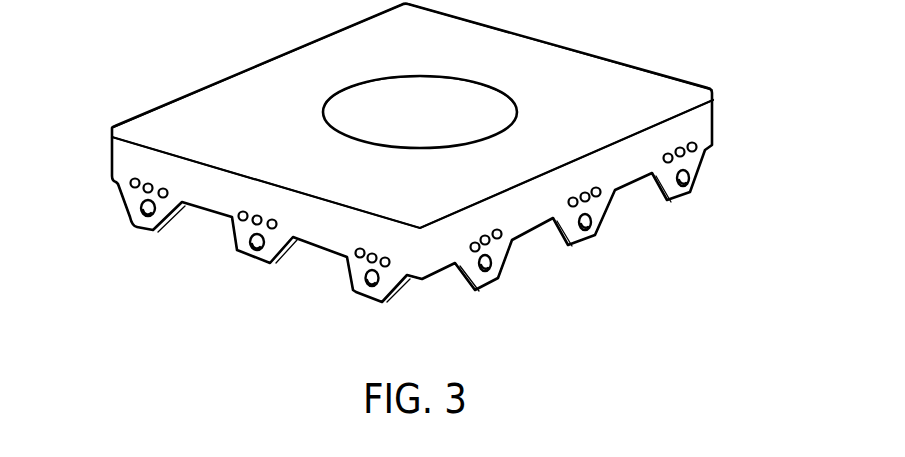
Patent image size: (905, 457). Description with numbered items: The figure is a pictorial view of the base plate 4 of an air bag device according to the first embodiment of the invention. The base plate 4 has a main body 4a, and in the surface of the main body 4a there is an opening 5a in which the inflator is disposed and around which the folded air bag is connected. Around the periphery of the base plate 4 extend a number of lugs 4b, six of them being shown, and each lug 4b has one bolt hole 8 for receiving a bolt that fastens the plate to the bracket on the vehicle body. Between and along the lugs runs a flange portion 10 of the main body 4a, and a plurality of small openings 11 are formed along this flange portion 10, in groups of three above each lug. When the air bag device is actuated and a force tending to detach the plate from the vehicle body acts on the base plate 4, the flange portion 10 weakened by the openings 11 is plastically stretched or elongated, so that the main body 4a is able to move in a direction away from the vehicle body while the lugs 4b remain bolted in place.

The base plate 4 is at (685, 63).
The main body 4a is at (608, 78).
The lugs 4b is at (125, 208).
The opening 5a is at (375, 90).
The bolt hole 8 is at (153, 214).
The flange portion 10 is at (118, 192).
The openings 11 is at (163, 188).